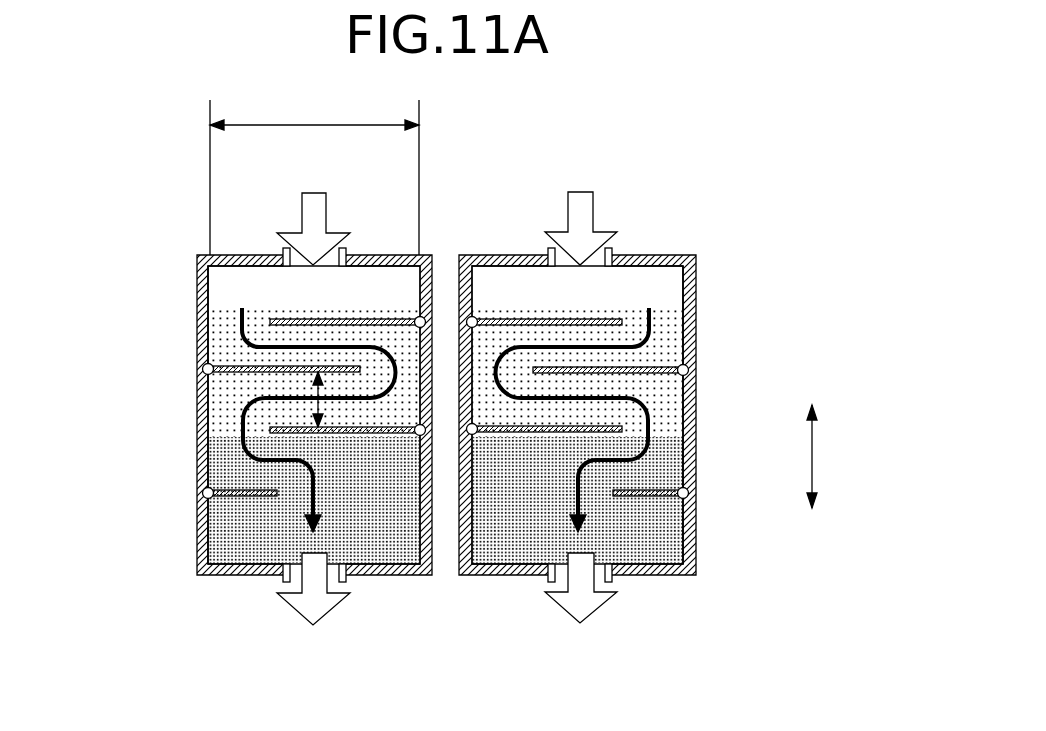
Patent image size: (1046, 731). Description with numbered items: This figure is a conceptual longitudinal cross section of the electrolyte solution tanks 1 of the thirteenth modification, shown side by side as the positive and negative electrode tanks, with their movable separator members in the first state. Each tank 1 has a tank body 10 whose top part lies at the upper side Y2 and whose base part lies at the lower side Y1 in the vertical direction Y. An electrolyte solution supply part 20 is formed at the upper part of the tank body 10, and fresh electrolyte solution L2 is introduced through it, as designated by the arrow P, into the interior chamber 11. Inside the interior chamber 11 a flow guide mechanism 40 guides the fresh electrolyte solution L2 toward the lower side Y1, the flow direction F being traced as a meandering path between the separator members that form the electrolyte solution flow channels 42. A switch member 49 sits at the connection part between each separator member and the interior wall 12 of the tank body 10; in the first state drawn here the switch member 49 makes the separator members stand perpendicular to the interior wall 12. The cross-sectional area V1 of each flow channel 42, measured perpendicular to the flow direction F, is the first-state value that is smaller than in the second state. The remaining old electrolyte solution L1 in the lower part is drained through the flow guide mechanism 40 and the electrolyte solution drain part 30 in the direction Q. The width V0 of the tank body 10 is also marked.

The electrolyte solution tank 1 is at (225, 214).
The tank body 10 is at (223, 257).
The interior chamber 11 is at (225, 305).
The interior wall 12 is at (210, 293).
The electrolyte solution supply part 20 is at (345, 253).
The electrolyte solution drain part 30 is at (280, 577).
The flow guide mechanism 40 is at (222, 497).
The electrolyte solution flow channel 42 is at (225, 412).
The switch member 49 is at (206, 364).
The flow direction F is at (238, 430).
The arrow P is at (308, 200).
The direction Q is at (317, 602).
The remaining electrolyte solution L1 is at (217, 470).
The fresh electrolyte solution L2 is at (198, 388).
The housing width V0 is at (314, 174).
The cross-sectional area V1 is at (322, 405).
The vertical direction Y is at (825, 456).
The lower side Y1 is at (817, 531).
The upper side Y2 is at (817, 389).